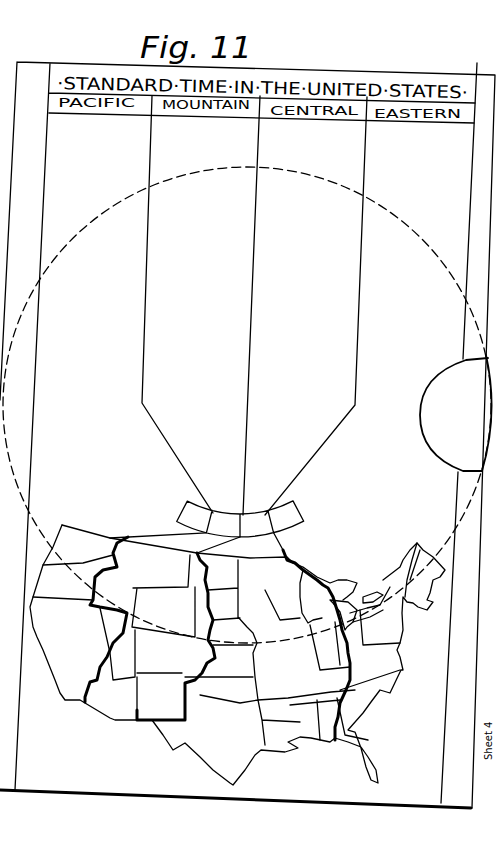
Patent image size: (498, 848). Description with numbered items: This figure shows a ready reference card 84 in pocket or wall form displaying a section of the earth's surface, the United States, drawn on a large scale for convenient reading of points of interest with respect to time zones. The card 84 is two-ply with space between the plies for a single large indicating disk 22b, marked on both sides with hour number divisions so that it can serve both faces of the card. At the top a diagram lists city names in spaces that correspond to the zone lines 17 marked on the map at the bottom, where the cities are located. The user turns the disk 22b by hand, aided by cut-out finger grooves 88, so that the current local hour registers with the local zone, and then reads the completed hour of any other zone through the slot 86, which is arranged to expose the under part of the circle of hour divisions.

The lines marking zones 17 is at (245, 430).
The card 84 is at (446, 346).
The slot 86 is at (302, 524).
The finger grooves 88 is at (438, 378).
The indicating disk 22b is at (470, 457).